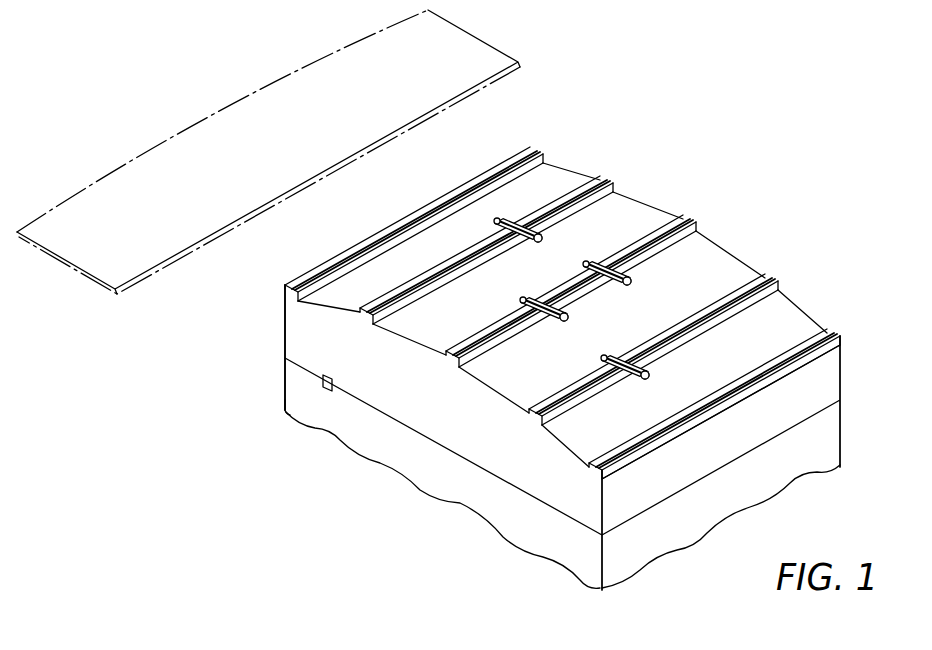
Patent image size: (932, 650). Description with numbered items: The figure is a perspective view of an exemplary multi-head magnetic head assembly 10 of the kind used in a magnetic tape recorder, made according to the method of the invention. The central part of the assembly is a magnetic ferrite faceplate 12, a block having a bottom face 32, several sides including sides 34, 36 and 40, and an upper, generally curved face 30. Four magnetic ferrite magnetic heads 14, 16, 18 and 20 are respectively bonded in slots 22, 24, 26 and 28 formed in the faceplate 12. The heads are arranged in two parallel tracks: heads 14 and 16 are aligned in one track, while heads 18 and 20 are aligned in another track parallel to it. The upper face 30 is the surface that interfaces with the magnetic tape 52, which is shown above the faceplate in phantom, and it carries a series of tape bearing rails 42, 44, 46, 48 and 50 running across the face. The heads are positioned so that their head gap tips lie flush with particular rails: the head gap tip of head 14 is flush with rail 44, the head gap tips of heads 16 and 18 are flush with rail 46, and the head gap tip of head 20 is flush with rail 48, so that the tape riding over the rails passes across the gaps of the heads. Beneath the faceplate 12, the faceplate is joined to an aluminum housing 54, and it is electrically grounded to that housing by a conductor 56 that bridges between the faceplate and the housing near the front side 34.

The magnetic head assembly 10 is at (678, 195).
The magnetic ferrite faceplate 12 is at (294, 331).
The magnetic ferrite magnetic head 14 is at (523, 220).
The magnetic ferrite magnetic head 16 is at (612, 267).
The magnetic ferrite magnetic head 18 is at (547, 300).
The magnetic ferrite magnetic head 20 is at (632, 357).
The slot 22 is at (540, 235).
The slot 24 is at (629, 280).
The slot 26 is at (566, 316).
The slot 28 is at (647, 376).
The upper curved face 30 is at (407, 267).
The bottom face 32 is at (465, 460).
The side 34 is at (457, 426).
The side 36 is at (283, 342).
The side 40 is at (813, 388).
The tape bearing rail 42 is at (534, 148).
The tape bearing rail 44 is at (603, 180).
The tape bearing rail 46 is at (690, 218).
The tape bearing rail 48 is at (780, 280).
The tape bearing rail 50 is at (830, 330).
The magnetic tape 52 is at (490, 60).
The aluminum housing 54 is at (283, 382).
The conductor 56 is at (323, 382).